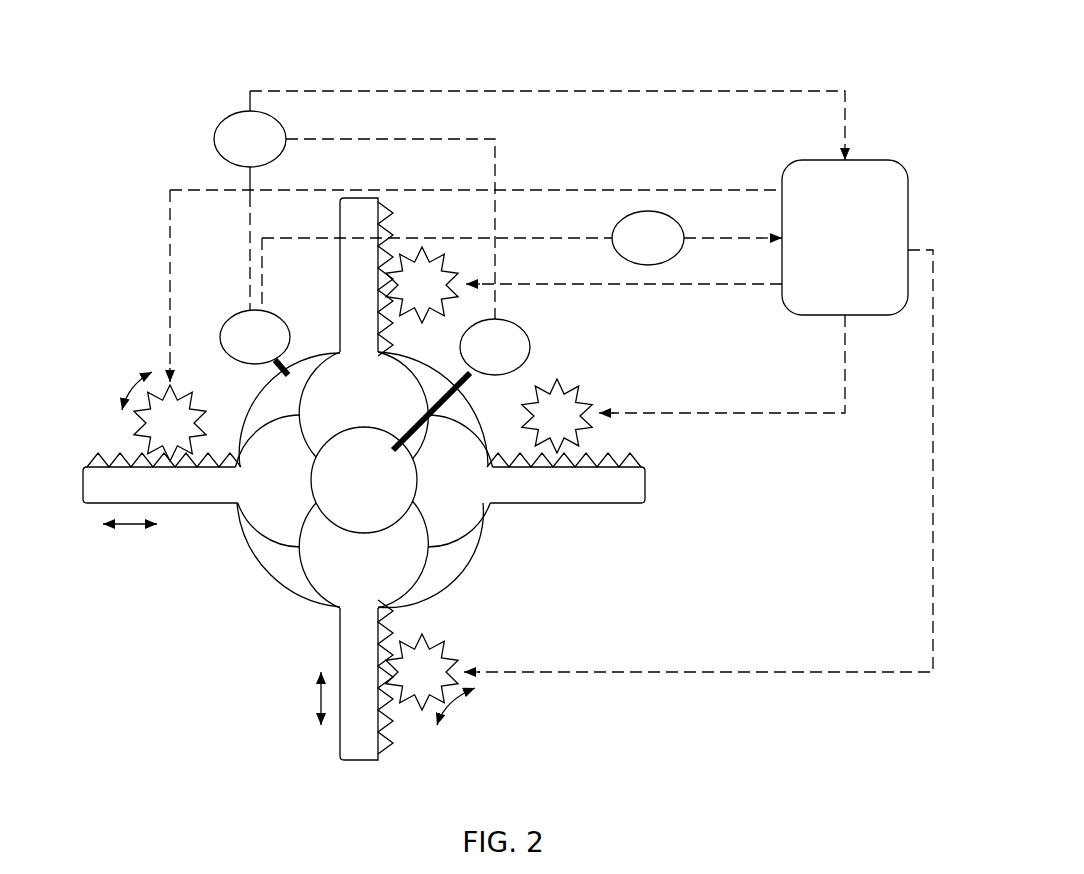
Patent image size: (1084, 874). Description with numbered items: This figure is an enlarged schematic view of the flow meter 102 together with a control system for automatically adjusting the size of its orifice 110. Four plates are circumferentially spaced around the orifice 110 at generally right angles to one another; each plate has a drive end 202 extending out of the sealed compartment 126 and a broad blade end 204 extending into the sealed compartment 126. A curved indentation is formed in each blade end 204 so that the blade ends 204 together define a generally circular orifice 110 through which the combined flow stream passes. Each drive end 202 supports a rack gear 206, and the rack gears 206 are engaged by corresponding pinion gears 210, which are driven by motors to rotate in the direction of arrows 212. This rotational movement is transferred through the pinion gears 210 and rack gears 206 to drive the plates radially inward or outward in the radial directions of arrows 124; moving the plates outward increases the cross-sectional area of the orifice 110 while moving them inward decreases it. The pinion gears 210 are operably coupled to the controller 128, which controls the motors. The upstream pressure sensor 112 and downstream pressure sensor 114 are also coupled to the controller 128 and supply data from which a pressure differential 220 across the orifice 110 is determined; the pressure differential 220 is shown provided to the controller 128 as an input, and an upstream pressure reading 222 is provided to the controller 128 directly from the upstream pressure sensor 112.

The flow meter 102 is at (790, 58).
The orifice 110 is at (309, 488).
The upstream pressure sensor 112 is at (283, 315).
The downstream pressure sensor 114 is at (526, 332).
The radial directions 124 is at (130, 530).
The sealed compartment 126 is at (313, 605).
The controller 128 is at (904, 164).
The drive end 202 is at (106, 496).
The blade end 204 is at (346, 407).
The rack gear 206 is at (96, 455).
The pinion gear 210 is at (572, 389).
The arrows 212 is at (122, 378).
The pressure differential 220 is at (281, 124).
The upstream pressure reading 222 is at (679, 224).